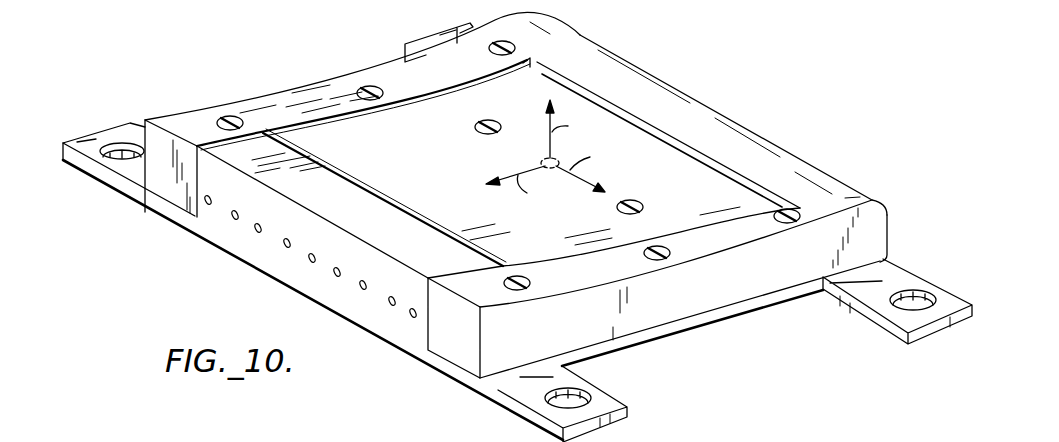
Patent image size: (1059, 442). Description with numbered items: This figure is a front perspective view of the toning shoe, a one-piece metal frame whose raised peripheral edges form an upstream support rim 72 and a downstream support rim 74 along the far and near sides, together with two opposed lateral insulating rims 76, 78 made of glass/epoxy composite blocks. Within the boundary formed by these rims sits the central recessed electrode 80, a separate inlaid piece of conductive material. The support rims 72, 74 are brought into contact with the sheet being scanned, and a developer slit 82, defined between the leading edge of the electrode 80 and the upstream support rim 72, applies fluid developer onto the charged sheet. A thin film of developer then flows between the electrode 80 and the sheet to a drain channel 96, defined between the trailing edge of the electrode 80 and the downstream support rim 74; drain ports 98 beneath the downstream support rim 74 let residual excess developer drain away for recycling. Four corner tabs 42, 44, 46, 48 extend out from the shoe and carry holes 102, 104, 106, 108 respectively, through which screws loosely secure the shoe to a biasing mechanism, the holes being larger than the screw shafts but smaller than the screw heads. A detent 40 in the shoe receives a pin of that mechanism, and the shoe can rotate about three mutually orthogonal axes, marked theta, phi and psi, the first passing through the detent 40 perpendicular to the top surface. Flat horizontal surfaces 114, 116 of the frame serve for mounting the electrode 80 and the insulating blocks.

The detent 40 is at (541, 162).
The tab 42 is at (124, 128).
The tab 44 is at (423, 43).
The tab 46 is at (530, 387).
The tab 48 is at (888, 272).
The upstream support rim 72 is at (707, 120).
The downstream support rim 74 is at (310, 172).
The lateral insulating rim 76 is at (267, 105).
The lateral insulating rim 78 is at (727, 219).
The electrode 80 is at (450, 140).
The developer slit 82 is at (560, 79).
The drain channel 96 is at (367, 189).
The drain ports 98 is at (309, 260).
The hole 102 is at (113, 160).
The hole 104 is at (460, 43).
The hole 106 is at (583, 397).
The hole 108 is at (893, 292).
The flat horizontal surface 114 is at (164, 220).
The flat horizontal surface 116 is at (648, 327).